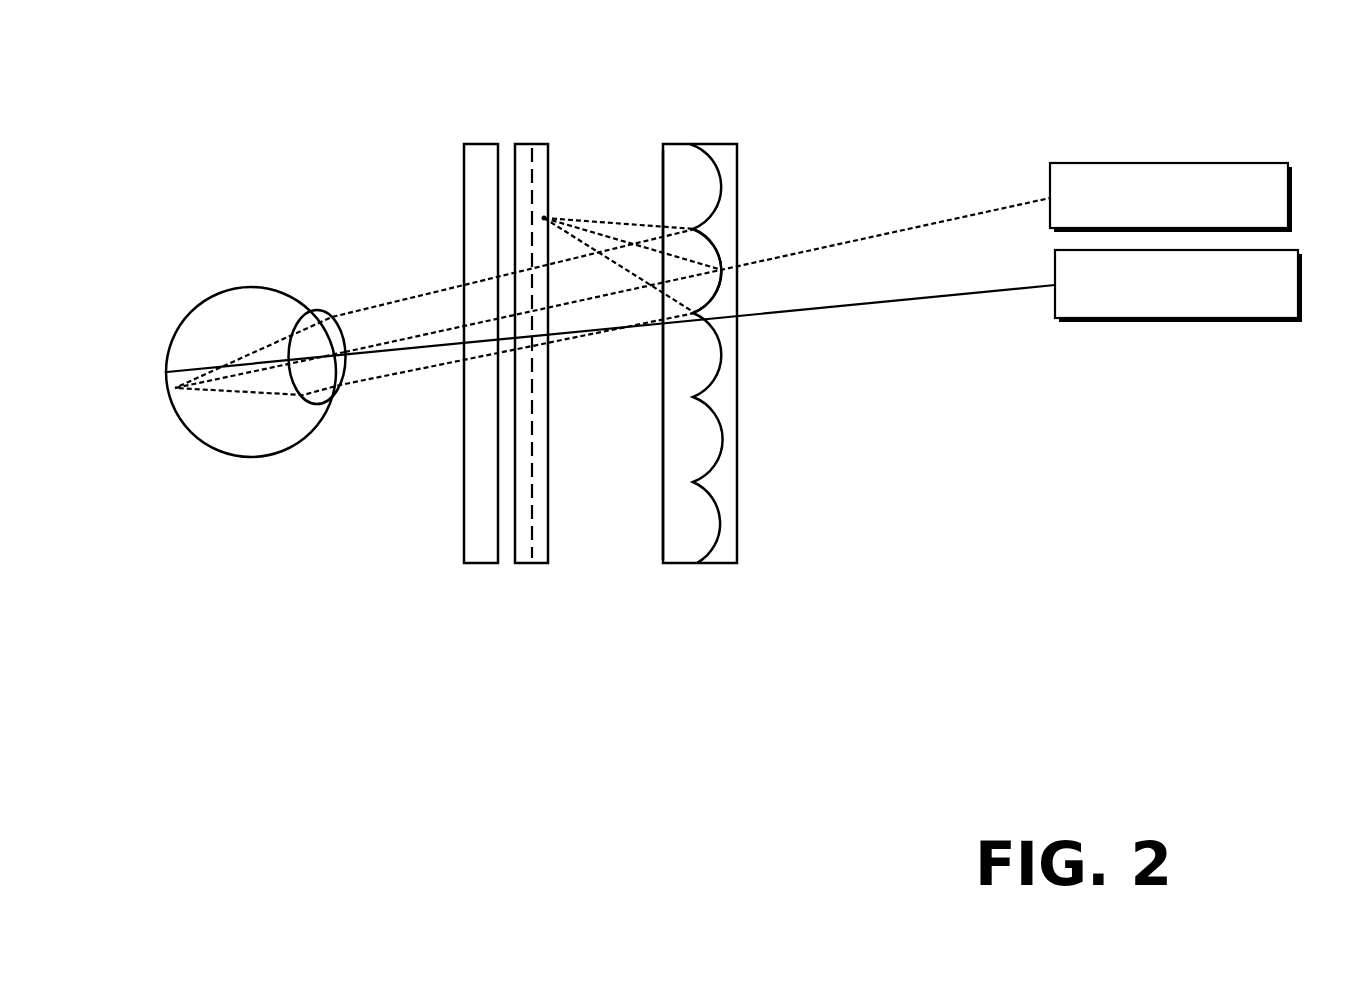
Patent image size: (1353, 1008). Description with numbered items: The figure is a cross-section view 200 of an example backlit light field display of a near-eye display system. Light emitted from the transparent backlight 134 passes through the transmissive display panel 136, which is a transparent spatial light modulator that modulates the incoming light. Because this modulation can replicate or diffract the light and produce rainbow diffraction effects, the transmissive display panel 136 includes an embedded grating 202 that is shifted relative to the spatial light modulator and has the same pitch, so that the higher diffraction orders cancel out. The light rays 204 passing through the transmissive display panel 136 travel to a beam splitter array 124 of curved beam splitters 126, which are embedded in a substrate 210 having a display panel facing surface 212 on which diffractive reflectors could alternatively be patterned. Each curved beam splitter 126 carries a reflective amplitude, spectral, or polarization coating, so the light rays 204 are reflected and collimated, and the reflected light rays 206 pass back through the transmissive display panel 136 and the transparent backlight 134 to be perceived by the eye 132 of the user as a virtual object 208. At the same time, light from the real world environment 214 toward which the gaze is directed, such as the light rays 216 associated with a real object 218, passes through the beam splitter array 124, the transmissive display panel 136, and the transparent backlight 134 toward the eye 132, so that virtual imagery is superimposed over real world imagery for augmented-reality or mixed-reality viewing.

The beam splitter array 124 is at (684, 137).
The curved beam splitter 126 is at (712, 233).
The eye 132 is at (247, 458).
The transparent backlight 134 is at (466, 564).
The transmissive display panel 136 is at (516, 564).
The cross-section view 200 is at (955, 68).
The grating 202 is at (535, 155).
The light rays 204 is at (548, 216).
The reflected light rays 206 is at (553, 340).
The virtual object 208 is at (1267, 210).
The substrate 210 is at (733, 564).
The display panel facing surface 212 is at (658, 548).
The real world environment 214 is at (1027, 404).
The light rays 216 is at (740, 317).
The real object 218 is at (1258, 296).